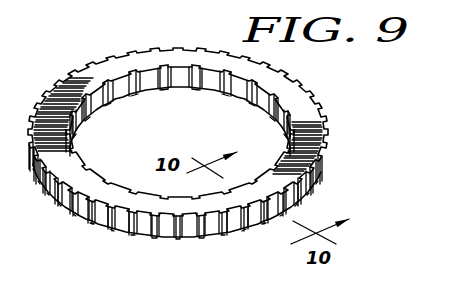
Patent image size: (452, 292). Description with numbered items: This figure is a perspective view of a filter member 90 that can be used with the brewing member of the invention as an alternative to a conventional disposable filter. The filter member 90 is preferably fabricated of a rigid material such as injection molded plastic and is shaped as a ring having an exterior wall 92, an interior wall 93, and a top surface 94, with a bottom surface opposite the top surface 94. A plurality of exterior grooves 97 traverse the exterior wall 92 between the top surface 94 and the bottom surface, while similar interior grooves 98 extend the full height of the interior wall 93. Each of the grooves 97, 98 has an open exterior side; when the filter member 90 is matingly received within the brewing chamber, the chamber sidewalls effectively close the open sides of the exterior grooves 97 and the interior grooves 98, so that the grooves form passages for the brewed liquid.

The filter member 90 is at (200, 149).
The exterior wall 92 is at (203, 231).
The interior wall 93 is at (178, 84).
The top surface 94 is at (150, 62).
The exterior grooves 97 is at (137, 231).
The interior grooves 98 is at (120, 90).